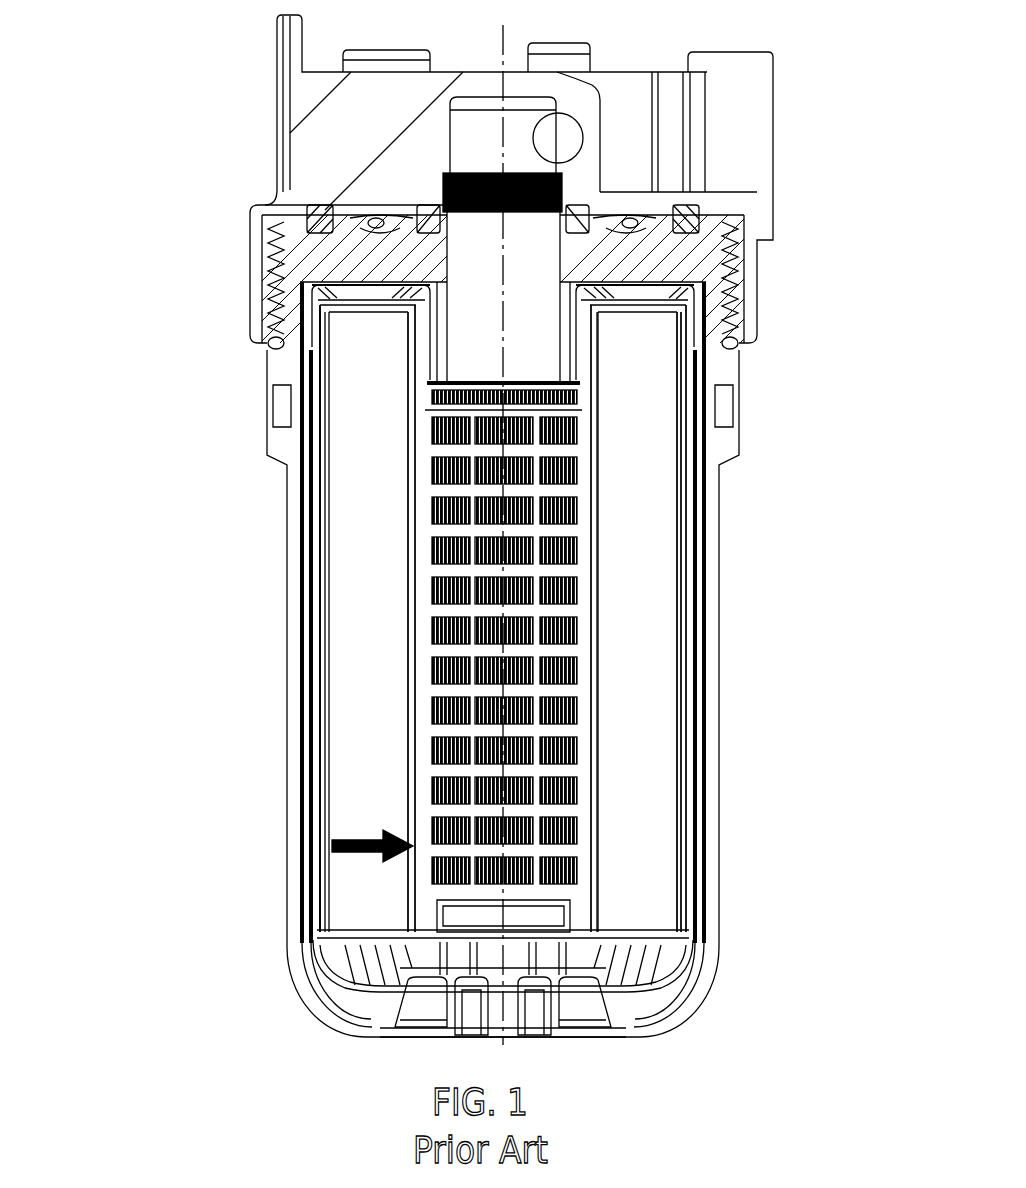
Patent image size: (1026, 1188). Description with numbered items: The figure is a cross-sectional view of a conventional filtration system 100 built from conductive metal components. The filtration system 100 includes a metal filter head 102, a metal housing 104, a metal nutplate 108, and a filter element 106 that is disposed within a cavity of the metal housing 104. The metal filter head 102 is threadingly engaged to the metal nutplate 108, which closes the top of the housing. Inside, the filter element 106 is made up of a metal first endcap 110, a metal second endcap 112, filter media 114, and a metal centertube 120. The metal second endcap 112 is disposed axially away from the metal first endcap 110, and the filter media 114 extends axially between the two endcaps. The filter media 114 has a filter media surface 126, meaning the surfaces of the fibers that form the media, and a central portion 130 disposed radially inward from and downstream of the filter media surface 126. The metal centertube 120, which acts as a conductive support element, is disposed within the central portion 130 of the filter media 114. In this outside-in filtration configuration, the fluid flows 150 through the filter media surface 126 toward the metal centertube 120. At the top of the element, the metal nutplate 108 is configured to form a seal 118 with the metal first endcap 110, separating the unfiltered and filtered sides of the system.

The filtration system 100 is at (135, 78).
The metal filter head 102 is at (262, 154).
The metal housing 104 is at (284, 611).
The filter element 106 is at (668, 558).
The metal nutplate 108 is at (286, 345).
The metal first endcap 110 is at (310, 320).
The metal second endcap 112 is at (315, 930).
The filter media 114 is at (642, 703).
The seal 118 is at (407, 381).
The metal centertube 120 is at (405, 712).
The filter media surface 126 is at (688, 853).
The central portion 130 is at (512, 650).
The fluid flow 150 is at (397, 823).